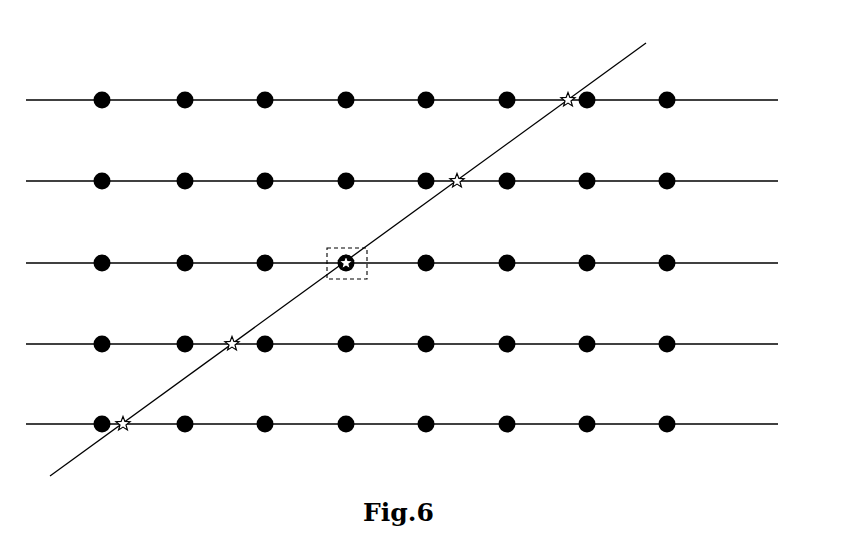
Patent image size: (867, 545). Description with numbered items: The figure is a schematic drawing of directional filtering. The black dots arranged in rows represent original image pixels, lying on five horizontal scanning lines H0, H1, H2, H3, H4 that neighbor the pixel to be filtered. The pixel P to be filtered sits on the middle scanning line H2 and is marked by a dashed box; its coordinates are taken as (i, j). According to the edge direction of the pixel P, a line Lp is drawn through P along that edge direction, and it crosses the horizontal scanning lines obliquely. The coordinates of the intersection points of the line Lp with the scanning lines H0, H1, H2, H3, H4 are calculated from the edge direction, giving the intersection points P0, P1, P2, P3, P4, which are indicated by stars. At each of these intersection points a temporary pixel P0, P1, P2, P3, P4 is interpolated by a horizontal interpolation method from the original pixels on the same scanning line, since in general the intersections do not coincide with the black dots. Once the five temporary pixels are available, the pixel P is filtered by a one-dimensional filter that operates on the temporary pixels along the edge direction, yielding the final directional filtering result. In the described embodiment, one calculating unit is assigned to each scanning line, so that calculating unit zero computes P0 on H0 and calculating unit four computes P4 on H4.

The horizontal scanning line H0 is at (423, 100).
The horizontal scanning line H1 is at (423, 181).
The horizontal scanning line H2 is at (423, 263).
The horizontal scanning line H3 is at (423, 344).
The horizontal scanning line H4 is at (423, 424).
The line along the edge direction Lp is at (358, 255).
The pixel to be filtered P is at (350, 270).
The intersection point P0 is at (566, 86).
The intersection point P1 is at (458, 166).
The intersection point P2 is at (335, 253).
The intersection point P3 is at (232, 331).
The intersection point P4 is at (125, 411).